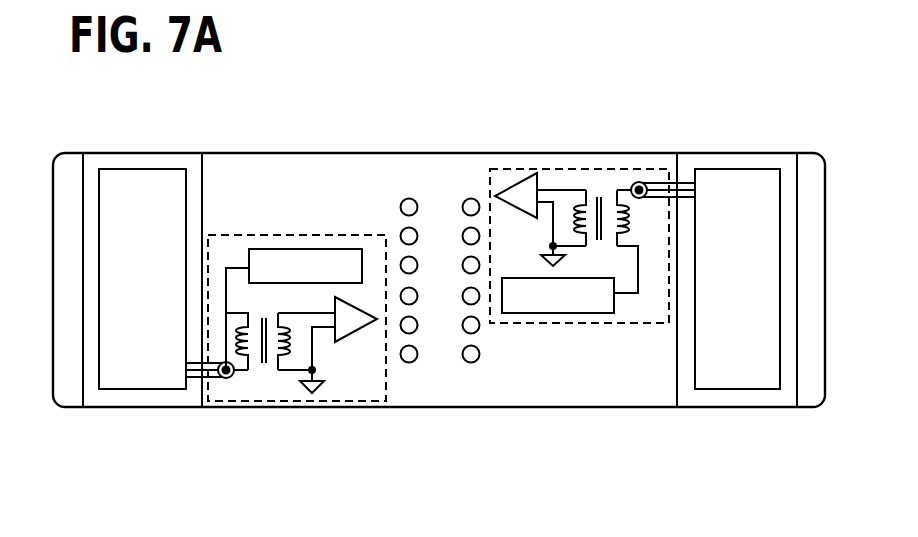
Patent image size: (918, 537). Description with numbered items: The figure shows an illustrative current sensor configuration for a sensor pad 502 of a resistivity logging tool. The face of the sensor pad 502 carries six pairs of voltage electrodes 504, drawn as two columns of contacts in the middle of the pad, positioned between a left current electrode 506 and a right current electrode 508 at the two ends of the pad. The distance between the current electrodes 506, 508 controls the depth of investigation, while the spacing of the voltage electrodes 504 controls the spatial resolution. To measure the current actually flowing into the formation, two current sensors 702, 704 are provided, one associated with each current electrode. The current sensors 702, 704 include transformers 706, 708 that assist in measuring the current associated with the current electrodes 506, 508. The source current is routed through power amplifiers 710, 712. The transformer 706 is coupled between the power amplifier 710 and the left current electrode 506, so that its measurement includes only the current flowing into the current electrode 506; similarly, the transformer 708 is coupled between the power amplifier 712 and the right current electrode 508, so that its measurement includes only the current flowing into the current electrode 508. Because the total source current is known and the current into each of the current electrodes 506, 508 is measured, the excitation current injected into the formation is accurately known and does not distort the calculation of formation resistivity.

The sensor pad 502 is at (303, 153).
The voltage electrodes 504 is at (471, 198).
The left current electrode 506 is at (123, 169).
The right current electrode 508 is at (767, 389).
The current sensor 702 is at (312, 307).
The current sensor 704 is at (592, 261).
The transformer 706 is at (266, 358).
The transformer 708 is at (599, 193).
The power amplifier 710 is at (324, 249).
The power amplifier 712 is at (560, 313).